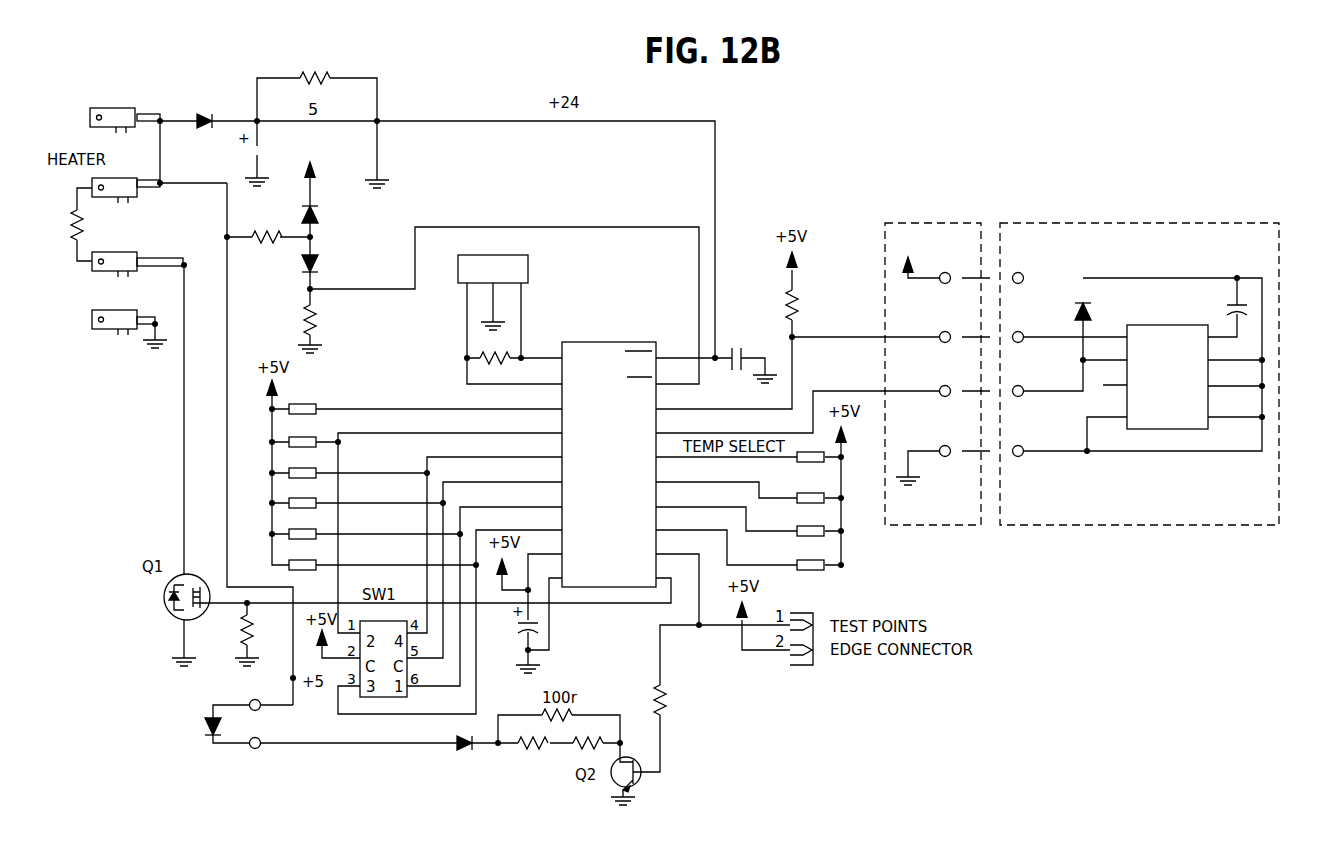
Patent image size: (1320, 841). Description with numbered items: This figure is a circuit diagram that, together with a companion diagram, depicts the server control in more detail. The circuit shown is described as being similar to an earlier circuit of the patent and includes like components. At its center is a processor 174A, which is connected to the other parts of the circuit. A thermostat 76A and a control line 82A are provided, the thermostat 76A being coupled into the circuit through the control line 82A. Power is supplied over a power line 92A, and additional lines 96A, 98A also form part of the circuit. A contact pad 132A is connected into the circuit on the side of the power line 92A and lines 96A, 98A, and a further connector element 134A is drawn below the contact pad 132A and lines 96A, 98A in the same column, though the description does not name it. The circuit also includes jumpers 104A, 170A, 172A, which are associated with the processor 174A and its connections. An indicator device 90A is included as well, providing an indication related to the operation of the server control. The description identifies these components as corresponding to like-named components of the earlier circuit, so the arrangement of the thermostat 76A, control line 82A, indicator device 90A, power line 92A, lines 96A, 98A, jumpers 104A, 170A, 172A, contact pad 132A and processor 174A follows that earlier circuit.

The contact pad 132A is at (125, 107).
The line 96A is at (128, 178).
The power line 92A is at (163, 130).
The line 98A is at (122, 252).
The connector 134A is at (106, 332).
The jumper 104A is at (588, 195).
The processor 174A is at (616, 340).
The jumper 170A is at (372, 396).
The jumper 172A is at (752, 432).
The control line 82A is at (949, 222).
The thermostat 76A is at (1180, 222).
The indicator device 90A is at (170, 732).